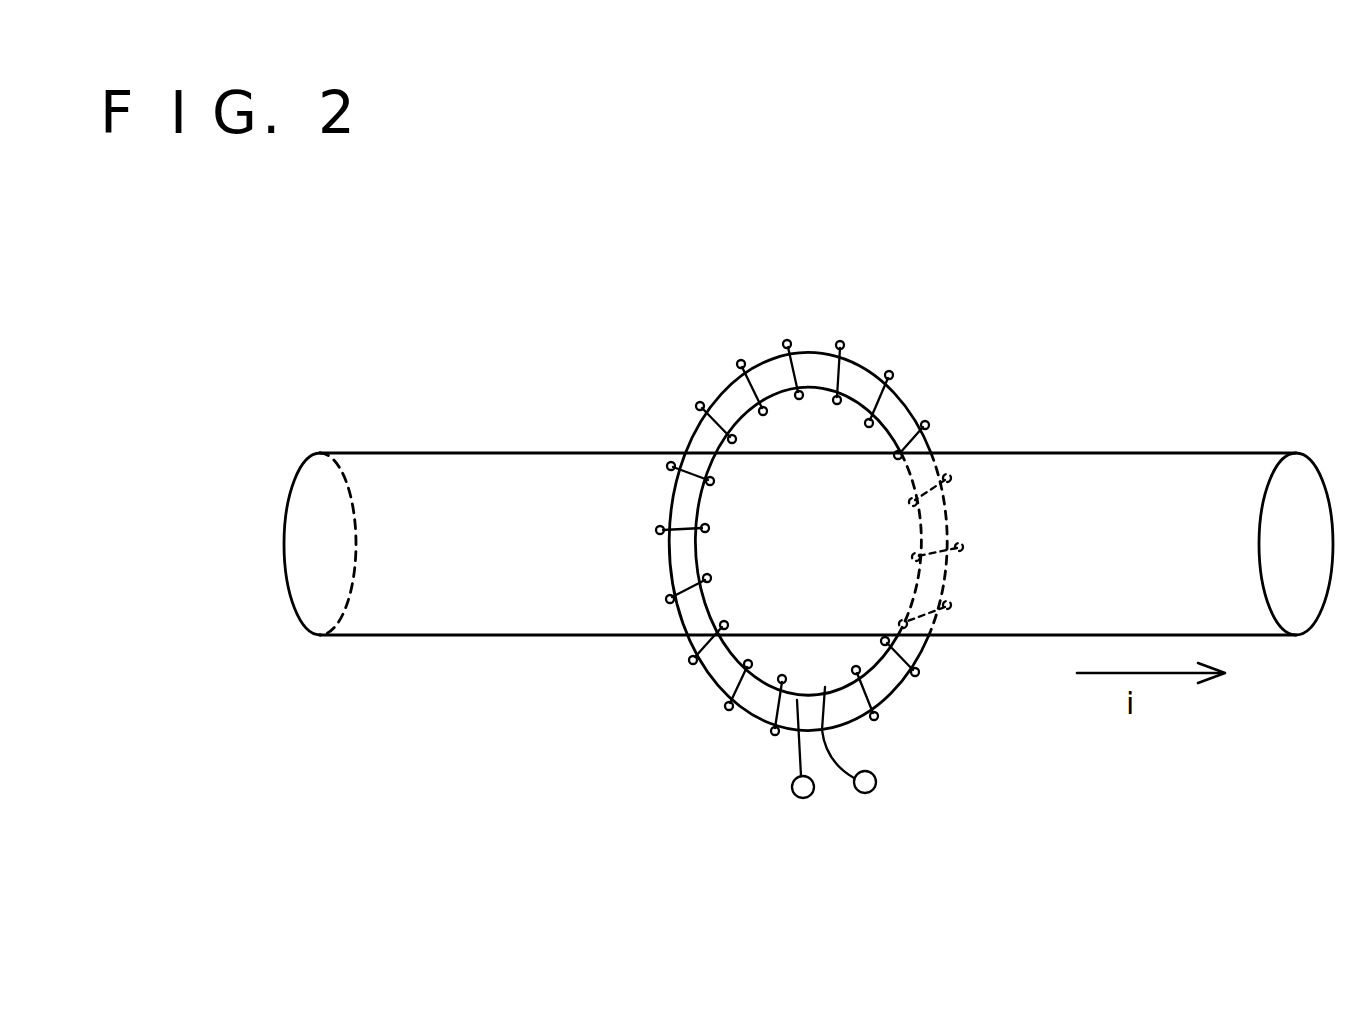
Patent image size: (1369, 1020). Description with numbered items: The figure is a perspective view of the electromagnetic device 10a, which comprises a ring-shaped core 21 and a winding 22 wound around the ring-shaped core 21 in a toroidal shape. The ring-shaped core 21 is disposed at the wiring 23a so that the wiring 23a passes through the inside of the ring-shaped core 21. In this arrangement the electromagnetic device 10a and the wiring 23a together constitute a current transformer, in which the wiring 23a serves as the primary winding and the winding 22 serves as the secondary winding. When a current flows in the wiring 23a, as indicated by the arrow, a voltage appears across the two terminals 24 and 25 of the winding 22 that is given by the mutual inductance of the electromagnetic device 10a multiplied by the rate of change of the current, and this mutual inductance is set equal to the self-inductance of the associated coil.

The electromagnetic device 10a is at (874, 565).
The ring-shaped core 21 is at (853, 375).
The winding 22 is at (742, 367).
The wiring 23a is at (1105, 470).
The terminal 24 is at (806, 798).
The terminal 25 is at (870, 793).